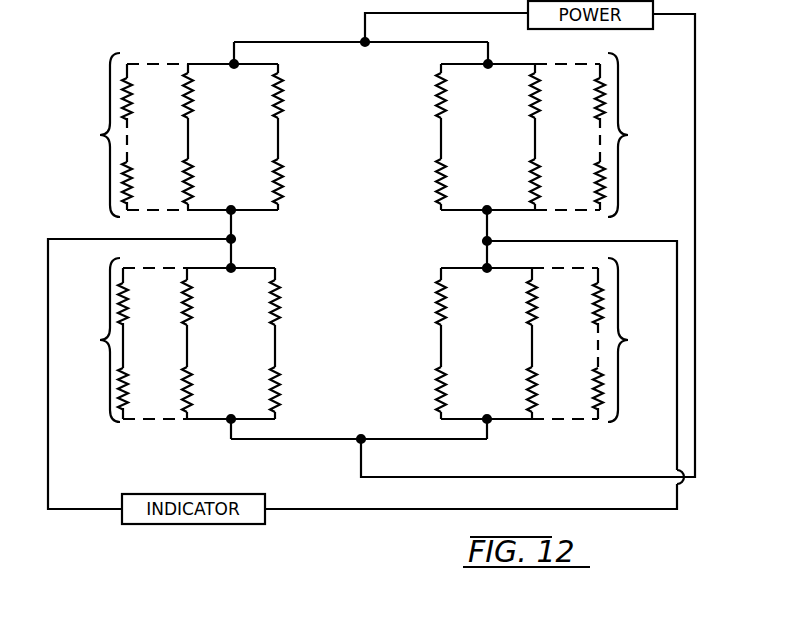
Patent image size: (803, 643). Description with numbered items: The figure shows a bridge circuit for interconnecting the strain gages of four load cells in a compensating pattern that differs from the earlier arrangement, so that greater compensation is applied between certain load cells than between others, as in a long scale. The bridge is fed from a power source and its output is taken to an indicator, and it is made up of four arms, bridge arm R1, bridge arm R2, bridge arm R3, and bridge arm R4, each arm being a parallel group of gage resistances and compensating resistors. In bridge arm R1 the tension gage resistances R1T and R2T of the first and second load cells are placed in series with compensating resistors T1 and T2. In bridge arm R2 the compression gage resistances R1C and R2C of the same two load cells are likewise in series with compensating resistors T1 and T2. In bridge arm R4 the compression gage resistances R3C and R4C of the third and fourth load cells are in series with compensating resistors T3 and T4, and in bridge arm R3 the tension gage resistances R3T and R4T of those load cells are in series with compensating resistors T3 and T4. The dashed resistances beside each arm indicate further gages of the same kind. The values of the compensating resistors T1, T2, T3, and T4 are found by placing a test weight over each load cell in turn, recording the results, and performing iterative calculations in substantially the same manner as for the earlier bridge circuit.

The first bridge arm R1 is at (303, 135).
The second bridge arm R2 is at (523, 135).
The third bridge arm R3 is at (522, 340).
The fourth bridge arm R4 is at (300, 340).
The tension strain gage resistance of load cell one R1T is at (207, 111).
The tension strain gage resistance of load cell two R2T is at (298, 111).
The compression strain gage resistance of load cell one R1C is at (416, 111).
The compression strain gage resistance of load cell two R2C is at (513, 111).
The compression strain gage resistance of load cell three R3C is at (208, 317).
The compression strain gage resistance of load cell four R4C is at (296, 317).
The tension strain gage resistance of load cell three R3T is at (418, 317).
The tension strain gage resistance of load cell four R4T is at (511, 317).
The compensating resistor T1 is at (314, 184).
The compensating resistor T2 is at (406, 184).
The compensating resistor T3 is at (314, 393).
The compensating resistor T4 is at (403, 393).